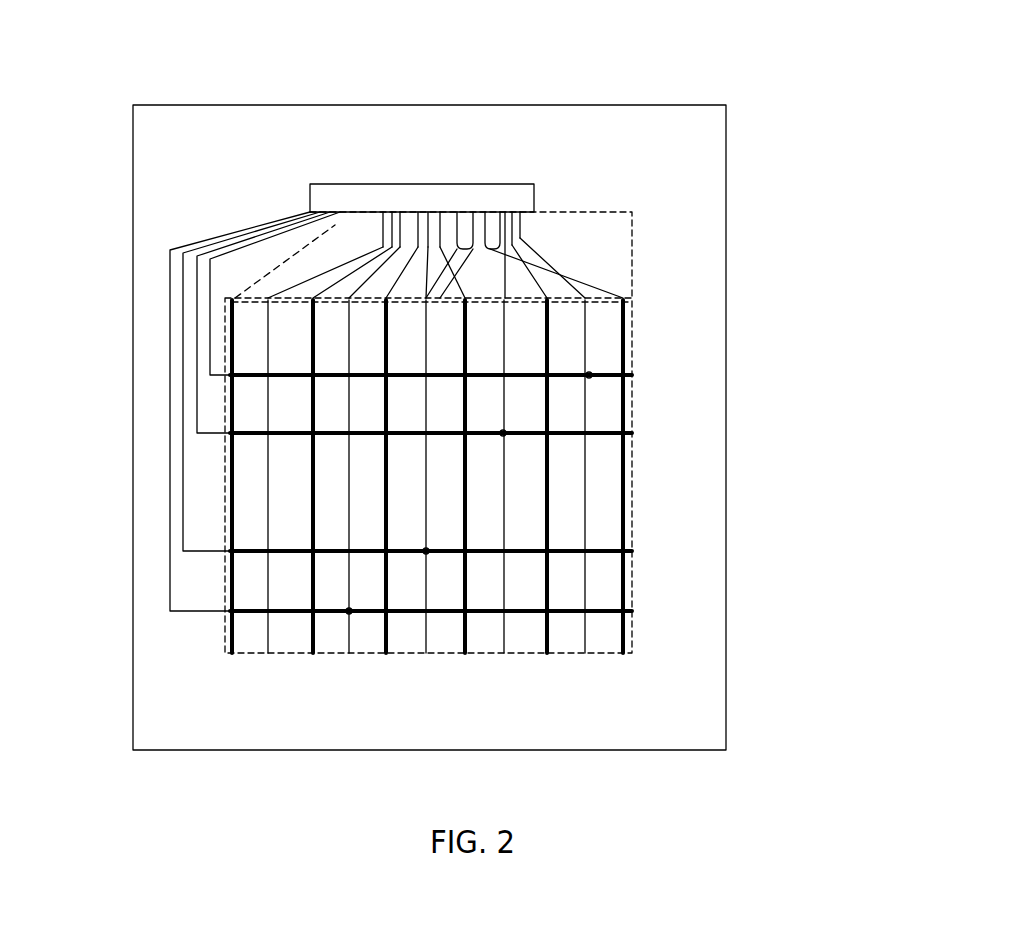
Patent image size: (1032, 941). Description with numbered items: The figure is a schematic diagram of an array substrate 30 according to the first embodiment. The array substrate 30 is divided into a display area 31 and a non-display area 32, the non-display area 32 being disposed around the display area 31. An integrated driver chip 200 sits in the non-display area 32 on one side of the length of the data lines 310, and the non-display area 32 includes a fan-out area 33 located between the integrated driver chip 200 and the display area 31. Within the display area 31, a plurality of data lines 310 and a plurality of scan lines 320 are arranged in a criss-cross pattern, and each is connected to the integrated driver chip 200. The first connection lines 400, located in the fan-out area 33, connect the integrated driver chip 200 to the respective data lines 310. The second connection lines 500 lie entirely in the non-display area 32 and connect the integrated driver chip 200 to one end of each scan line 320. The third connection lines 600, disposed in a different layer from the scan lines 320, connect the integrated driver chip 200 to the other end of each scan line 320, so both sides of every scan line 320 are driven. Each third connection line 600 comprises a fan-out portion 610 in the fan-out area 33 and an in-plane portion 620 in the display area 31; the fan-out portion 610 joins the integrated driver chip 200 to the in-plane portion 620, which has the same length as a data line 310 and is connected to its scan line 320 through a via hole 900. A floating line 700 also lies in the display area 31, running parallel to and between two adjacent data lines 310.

The array substrate 30 is at (818, 264).
The display area 31 is at (632, 468).
The non-display area 32 is at (727, 250).
The fan-out area 33 is at (603, 212).
The integrated driver chip 200 is at (427, 197).
The data lines 310 is at (225, 480).
The scan lines 320 is at (228, 383).
The first connection lines 400 is at (287, 282).
The second connection lines 500 is at (170, 275).
The third connection lines 600 is at (449, 149).
The fan-out portion 610 is at (515, 212).
The in-plane portion 620 is at (382, 293).
The floating line 700 is at (275, 530).
The via hole 900 is at (343, 613).